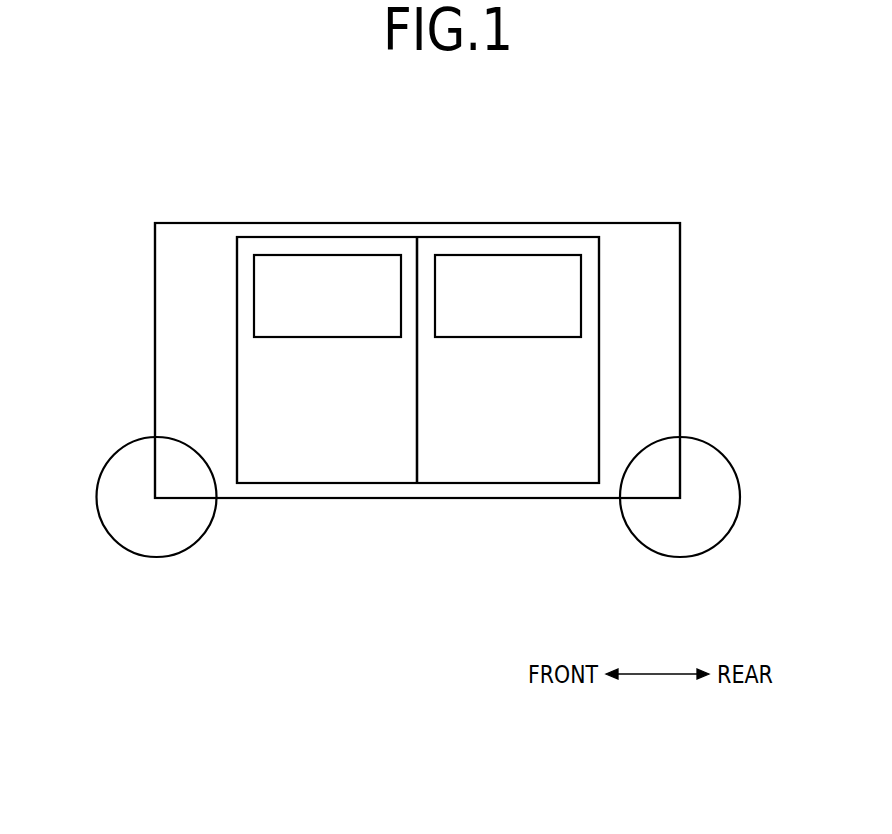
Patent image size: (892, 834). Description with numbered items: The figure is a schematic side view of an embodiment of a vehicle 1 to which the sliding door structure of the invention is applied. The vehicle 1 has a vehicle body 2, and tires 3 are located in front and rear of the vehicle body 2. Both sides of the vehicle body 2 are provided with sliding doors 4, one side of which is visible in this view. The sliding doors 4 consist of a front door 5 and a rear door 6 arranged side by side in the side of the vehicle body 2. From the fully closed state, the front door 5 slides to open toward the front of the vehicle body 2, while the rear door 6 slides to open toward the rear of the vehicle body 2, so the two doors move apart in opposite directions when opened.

The vehicle 1 is at (509, 199).
The vehicle body 2 is at (642, 232).
The tires 3 is at (133, 460).
The sliding doors 4 is at (361, 239).
The front door 5 is at (358, 472).
The rear door 6 is at (511, 472).